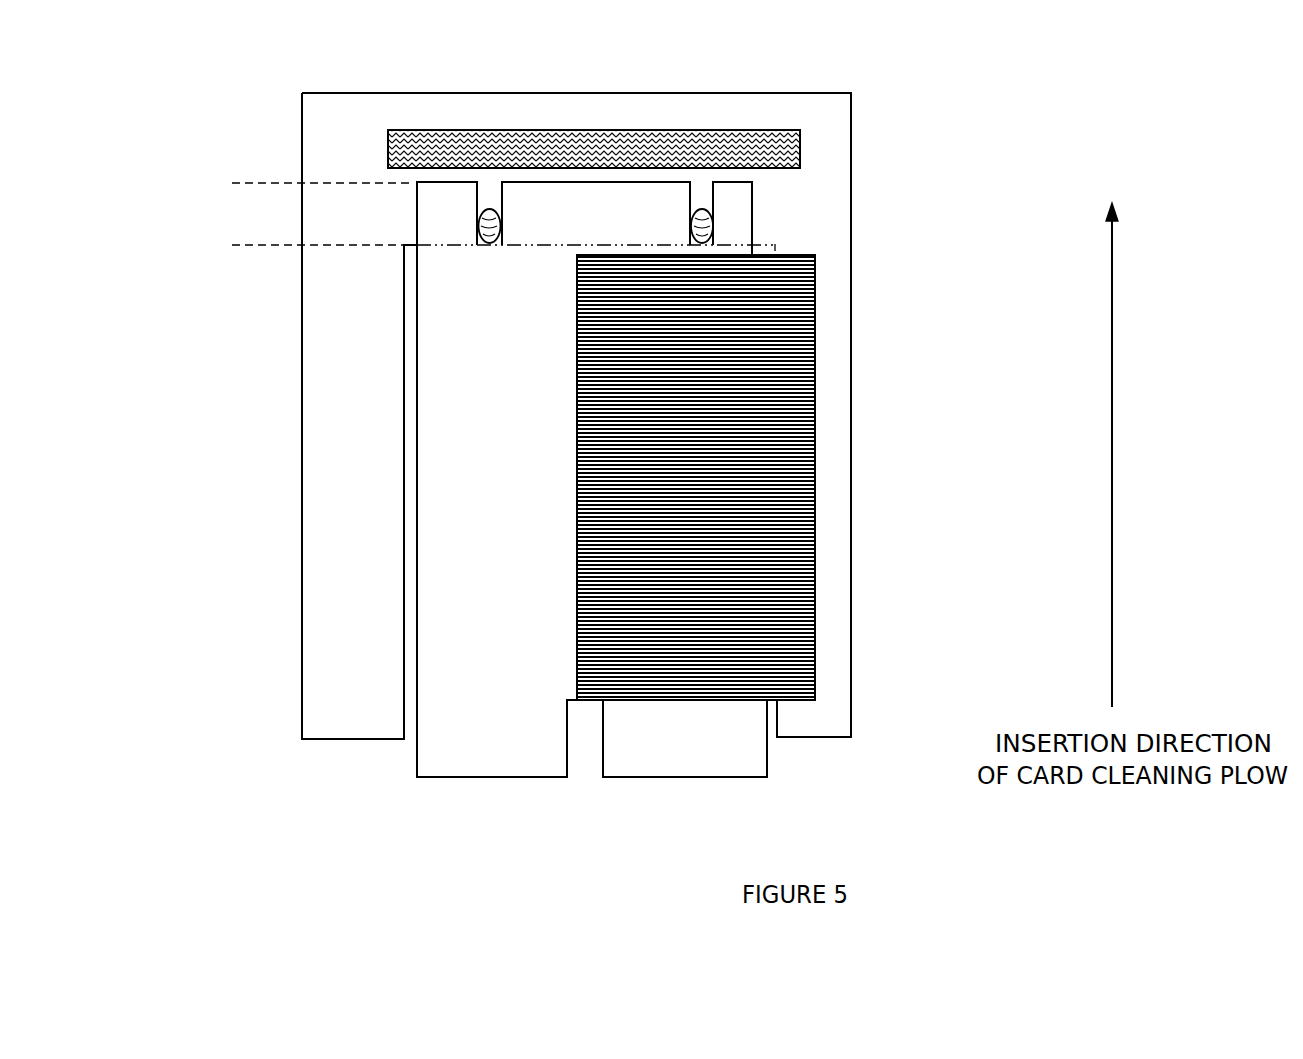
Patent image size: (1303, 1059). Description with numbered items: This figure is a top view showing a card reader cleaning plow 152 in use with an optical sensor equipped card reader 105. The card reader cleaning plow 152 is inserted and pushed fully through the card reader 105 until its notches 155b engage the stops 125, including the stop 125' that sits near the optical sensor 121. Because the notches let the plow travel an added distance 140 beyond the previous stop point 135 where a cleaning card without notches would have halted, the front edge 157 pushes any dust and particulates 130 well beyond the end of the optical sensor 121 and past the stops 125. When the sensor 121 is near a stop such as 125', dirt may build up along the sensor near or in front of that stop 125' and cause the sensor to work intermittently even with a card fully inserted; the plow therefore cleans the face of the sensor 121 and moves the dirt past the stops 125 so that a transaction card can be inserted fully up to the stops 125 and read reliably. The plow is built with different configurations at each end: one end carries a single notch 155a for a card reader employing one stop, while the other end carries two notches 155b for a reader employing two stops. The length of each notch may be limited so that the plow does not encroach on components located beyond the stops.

The card reader 105 is at (315, 512).
The optical sensor 121 is at (815, 583).
The stops 125 is at (478, 267).
The stop 125' is at (807, 231).
The dust and particulates 130 is at (790, 153).
The previous stop point 135 is at (453, 244).
The added distance 140 is at (200, 183).
The card reader cleaning plow 152 is at (428, 765).
The notch 155a is at (580, 750).
The notches 155b is at (702, 180).
The front edge 157 is at (735, 181).